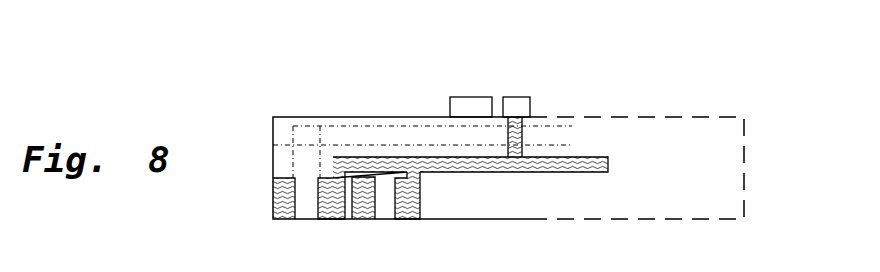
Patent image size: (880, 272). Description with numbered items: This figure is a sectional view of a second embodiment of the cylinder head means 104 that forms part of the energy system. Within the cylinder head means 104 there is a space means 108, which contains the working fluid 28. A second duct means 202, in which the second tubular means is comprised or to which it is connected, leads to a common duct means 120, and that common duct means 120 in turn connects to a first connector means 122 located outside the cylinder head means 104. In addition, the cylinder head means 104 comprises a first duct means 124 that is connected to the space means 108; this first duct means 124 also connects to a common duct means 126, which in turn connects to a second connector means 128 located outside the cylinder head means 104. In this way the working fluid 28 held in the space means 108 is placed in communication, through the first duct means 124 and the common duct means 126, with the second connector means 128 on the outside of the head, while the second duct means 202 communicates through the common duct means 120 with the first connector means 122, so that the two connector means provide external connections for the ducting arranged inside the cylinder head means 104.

The cylinder head means 104 is at (744, 204).
The space means 108 is at (275, 200).
The second duct means 202 is at (297, 145).
The common duct means 126 is at (505, 140).
The first duct means 124 is at (608, 165).
The working fluid 28 is at (410, 210).
The common duct means 120 is at (547, 138).
The first connector means 122 is at (472, 96).
The second connector means 128 is at (515, 96).